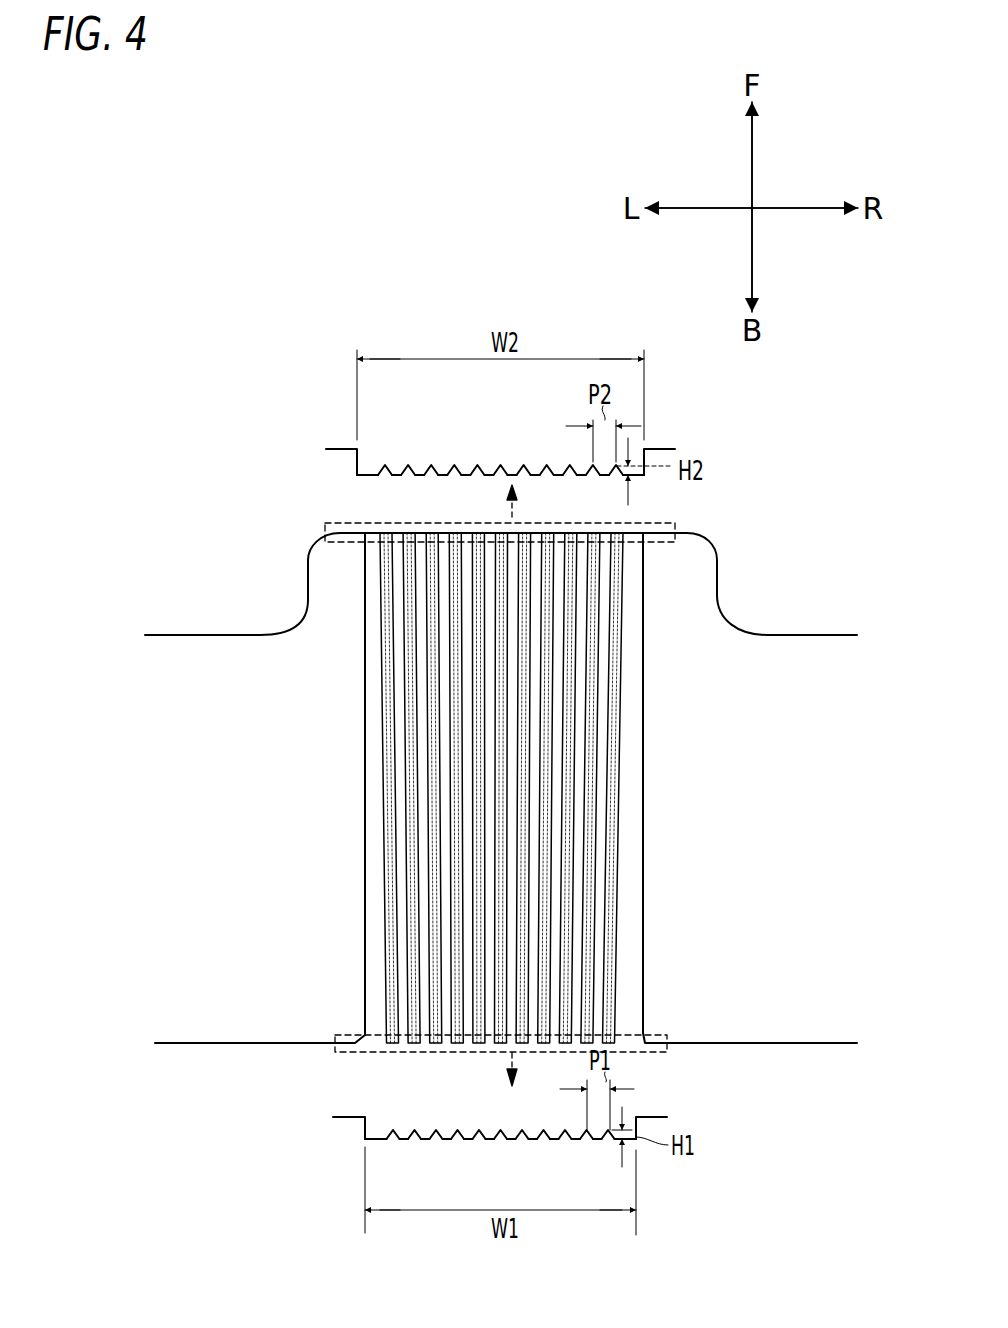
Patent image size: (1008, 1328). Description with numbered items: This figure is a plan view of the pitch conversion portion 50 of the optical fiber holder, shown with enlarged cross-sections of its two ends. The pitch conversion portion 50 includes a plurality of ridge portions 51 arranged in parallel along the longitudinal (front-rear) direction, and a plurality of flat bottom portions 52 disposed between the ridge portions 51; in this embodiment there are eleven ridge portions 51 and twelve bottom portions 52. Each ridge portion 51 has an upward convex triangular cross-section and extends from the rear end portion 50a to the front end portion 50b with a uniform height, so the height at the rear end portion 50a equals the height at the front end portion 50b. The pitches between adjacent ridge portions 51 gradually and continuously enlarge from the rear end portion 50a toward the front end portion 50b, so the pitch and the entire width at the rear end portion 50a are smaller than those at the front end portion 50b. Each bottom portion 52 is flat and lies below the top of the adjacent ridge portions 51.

The pitch conversion portion 50 is at (652, 795).
The rear end portion 50a is at (616, 1055).
The front end portion 50b is at (635, 524).
The ridge portion 51 is at (385, 466).
The bottom portion 52 is at (370, 473).